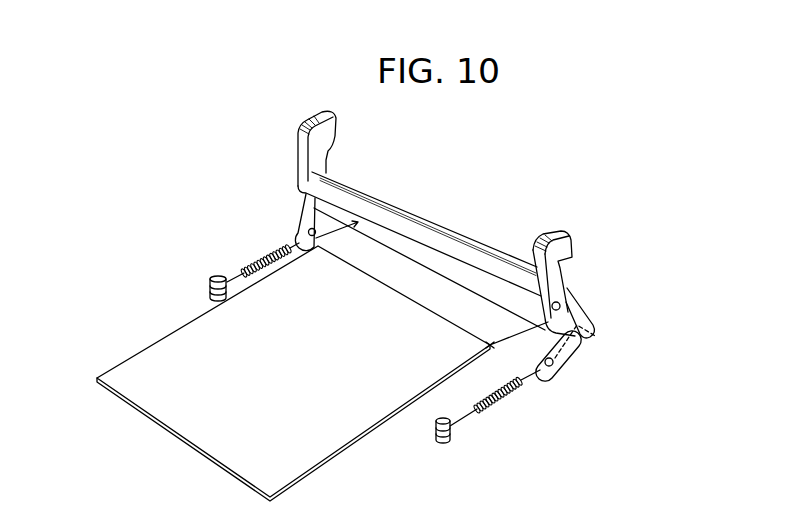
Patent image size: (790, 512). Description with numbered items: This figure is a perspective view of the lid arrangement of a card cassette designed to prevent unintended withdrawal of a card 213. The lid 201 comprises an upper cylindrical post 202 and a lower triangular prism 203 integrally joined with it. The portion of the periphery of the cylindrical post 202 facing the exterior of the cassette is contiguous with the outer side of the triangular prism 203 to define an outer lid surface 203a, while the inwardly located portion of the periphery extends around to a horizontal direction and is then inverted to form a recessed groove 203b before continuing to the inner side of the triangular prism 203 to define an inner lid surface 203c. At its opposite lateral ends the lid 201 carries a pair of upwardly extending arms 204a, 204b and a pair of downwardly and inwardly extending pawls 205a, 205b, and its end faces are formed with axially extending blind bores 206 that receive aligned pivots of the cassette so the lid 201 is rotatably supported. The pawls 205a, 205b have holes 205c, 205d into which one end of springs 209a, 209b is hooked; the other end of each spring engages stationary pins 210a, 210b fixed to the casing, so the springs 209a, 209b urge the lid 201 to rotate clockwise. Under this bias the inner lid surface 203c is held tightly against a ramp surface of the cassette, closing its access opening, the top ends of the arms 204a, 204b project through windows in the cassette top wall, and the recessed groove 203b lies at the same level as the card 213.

The lid 201 is at (413, 210).
The cylindrical post 202 is at (458, 252).
The triangular prism 203 is at (457, 283).
The outer lid surface 203a is at (583, 301).
The recessed groove 203b is at (403, 260).
The inner lid surface 203c is at (583, 325).
The arm 204a is at (318, 137).
The arm 204b is at (568, 256).
The pawl 205a is at (307, 217).
The pawl 205b is at (566, 352).
The hole 205c is at (313, 248).
The hole 205d is at (552, 368).
The blind bore 206 is at (568, 298).
The spring 209a is at (255, 262).
The spring 209b is at (498, 413).
The stationary pin 210a is at (211, 277).
The stationary pin 210b is at (436, 431).
The card 213 is at (316, 440).